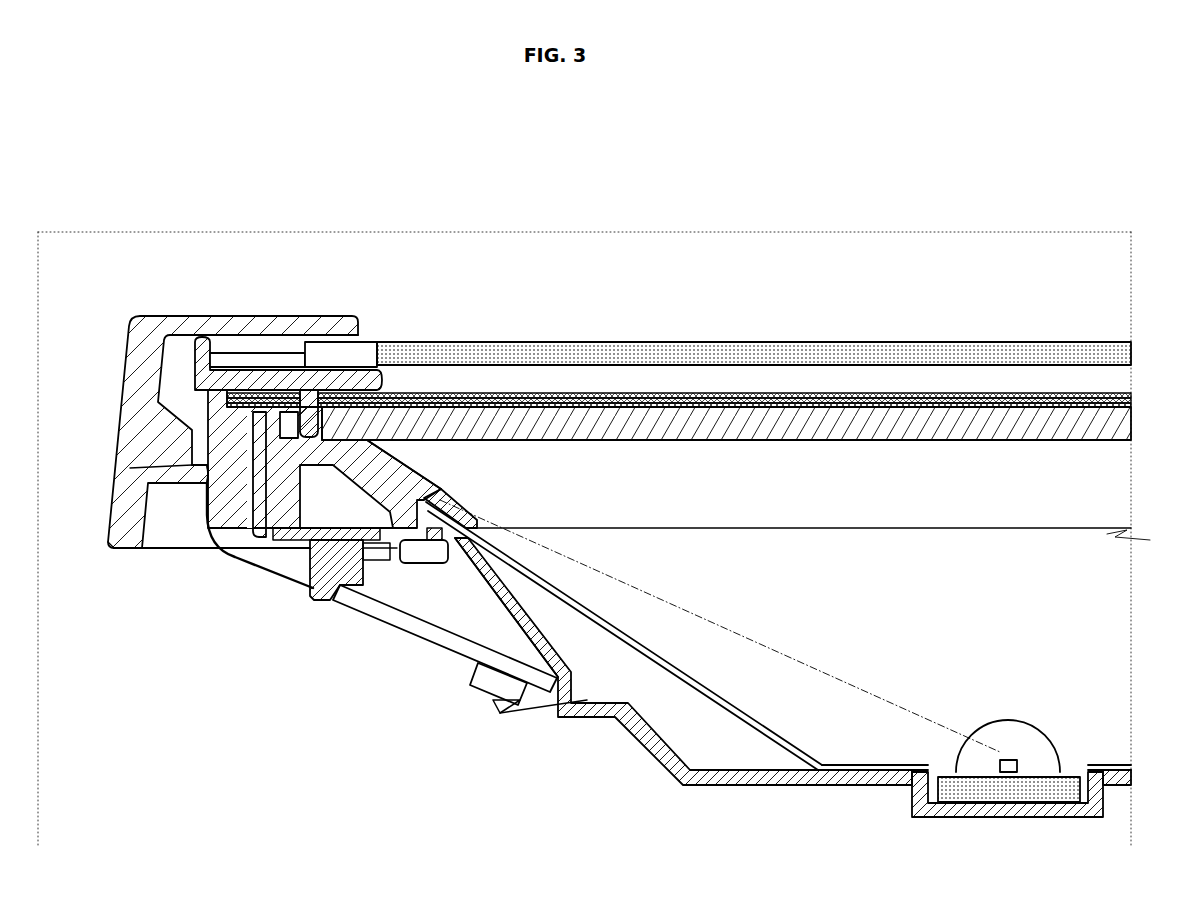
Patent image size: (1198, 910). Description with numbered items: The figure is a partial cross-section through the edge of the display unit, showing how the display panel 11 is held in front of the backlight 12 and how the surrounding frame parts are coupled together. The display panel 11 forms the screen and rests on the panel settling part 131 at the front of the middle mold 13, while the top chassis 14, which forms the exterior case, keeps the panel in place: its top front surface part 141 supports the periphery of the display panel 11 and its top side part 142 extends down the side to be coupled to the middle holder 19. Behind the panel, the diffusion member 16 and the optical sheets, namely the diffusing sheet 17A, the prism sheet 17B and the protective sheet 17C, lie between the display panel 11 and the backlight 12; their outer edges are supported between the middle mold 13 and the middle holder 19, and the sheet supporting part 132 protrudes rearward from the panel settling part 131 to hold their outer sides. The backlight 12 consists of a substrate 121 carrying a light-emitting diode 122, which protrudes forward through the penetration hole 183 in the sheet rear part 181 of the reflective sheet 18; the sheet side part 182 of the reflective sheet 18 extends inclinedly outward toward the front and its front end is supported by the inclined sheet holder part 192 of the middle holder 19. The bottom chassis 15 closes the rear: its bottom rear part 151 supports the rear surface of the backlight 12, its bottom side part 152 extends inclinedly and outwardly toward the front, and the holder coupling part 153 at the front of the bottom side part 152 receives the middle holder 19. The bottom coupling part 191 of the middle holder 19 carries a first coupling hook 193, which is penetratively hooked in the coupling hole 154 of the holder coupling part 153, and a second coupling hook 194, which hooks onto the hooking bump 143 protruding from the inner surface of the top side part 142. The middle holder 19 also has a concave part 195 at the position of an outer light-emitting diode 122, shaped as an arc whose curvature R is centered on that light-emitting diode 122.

The display panel 11 is at (517, 340).
The backlight 12 is at (979, 773).
The substrate 121 is at (1057, 803).
The light-emitting diode 122 is at (1008, 760).
The middle mold 13 is at (189, 362).
The panel settling part 131 is at (228, 363).
The sheet supporting part 132 is at (205, 410).
The top chassis 14 is at (157, 311).
The top front surface part 141 is at (277, 316).
The top side part 142 is at (117, 525).
The hooking bump 143 is at (203, 475).
The bottom chassis 15 is at (793, 686).
The bottom rear part 151 is at (807, 786).
The bottom side part 152 is at (653, 737).
The holder coupling part 153 is at (288, 538).
The coupling hole 154 is at (347, 590).
The diffusion member 16 is at (1133, 428).
The diffusing sheet 17A is at (1133, 405).
The prism sheet 17B is at (1133, 400).
The protective sheet 17C is at (1133, 394).
The reflective sheet 18 is at (778, 636).
The sheet rear part 181 is at (875, 764).
The sheet side part 182 is at (765, 725).
The penetration hole 183 is at (1063, 762).
The middle holder 19 is at (336, 525).
The bottom coupling part 191 is at (268, 533).
The sheet holder part 192 is at (413, 473).
The first coupling hook 193 is at (433, 563).
The second coupling hook 194 is at (130, 468).
The concave part 195 is at (470, 513).
The curvature R is at (720, 626).